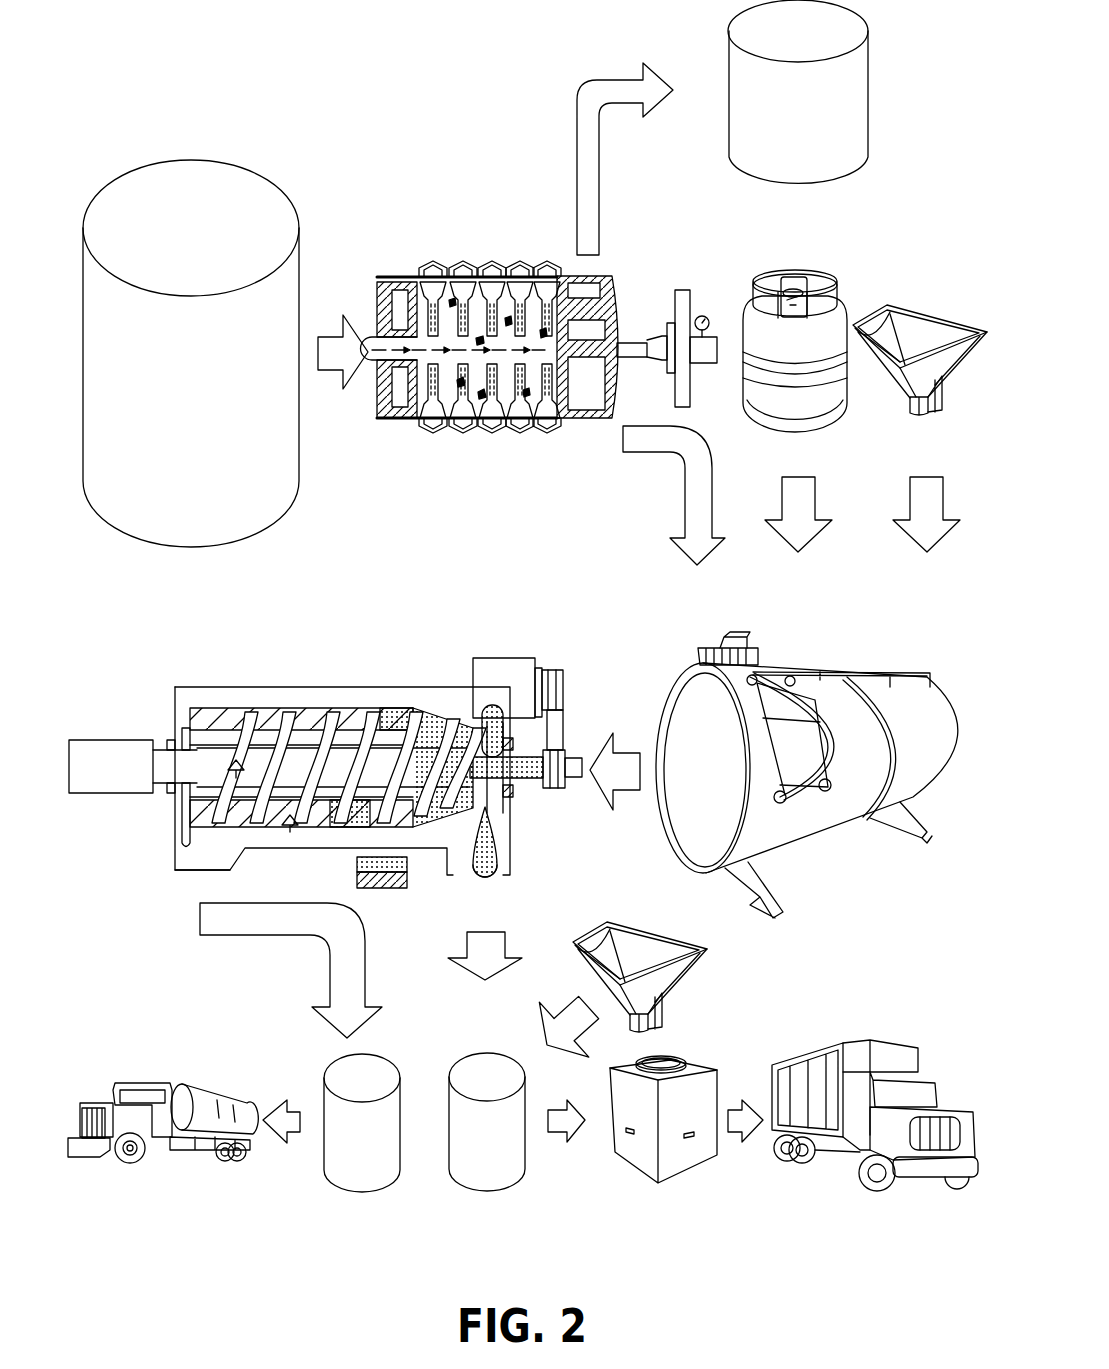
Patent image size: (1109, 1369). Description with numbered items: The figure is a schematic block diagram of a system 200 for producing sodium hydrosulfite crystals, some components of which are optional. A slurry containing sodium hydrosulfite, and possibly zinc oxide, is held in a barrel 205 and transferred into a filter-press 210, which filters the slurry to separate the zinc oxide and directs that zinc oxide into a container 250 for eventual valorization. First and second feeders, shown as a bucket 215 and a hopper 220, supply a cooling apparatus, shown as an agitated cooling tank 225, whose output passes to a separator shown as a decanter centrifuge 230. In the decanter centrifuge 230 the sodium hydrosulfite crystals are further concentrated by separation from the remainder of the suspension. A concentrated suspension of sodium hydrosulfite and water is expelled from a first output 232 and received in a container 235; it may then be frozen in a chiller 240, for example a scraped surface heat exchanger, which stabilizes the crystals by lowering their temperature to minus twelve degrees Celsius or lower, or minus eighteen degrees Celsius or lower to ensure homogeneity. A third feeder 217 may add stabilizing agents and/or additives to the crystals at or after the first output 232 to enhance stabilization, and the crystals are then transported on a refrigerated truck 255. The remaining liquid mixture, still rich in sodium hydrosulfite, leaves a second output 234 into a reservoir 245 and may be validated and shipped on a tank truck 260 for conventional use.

The system 200 is at (226, 76).
The barrel 205 is at (303, 243).
The filter-press 210 is at (463, 267).
The bucket 215 is at (840, 292).
The third feeder 217 is at (700, 990).
The hopper 220 is at (905, 405).
The agitated cooling tank 225 is at (800, 672).
The decanter centrifuge 230 is at (277, 687).
The first output 232 is at (487, 888).
The second output 234 is at (184, 880).
The container 235 is at (445, 1178).
The chiller 240 is at (715, 1072).
The reservoir 245 is at (325, 1178).
The container 250 is at (872, 132).
The refrigerated truck 255 is at (890, 1040).
The tank truck 260 is at (195, 1085).